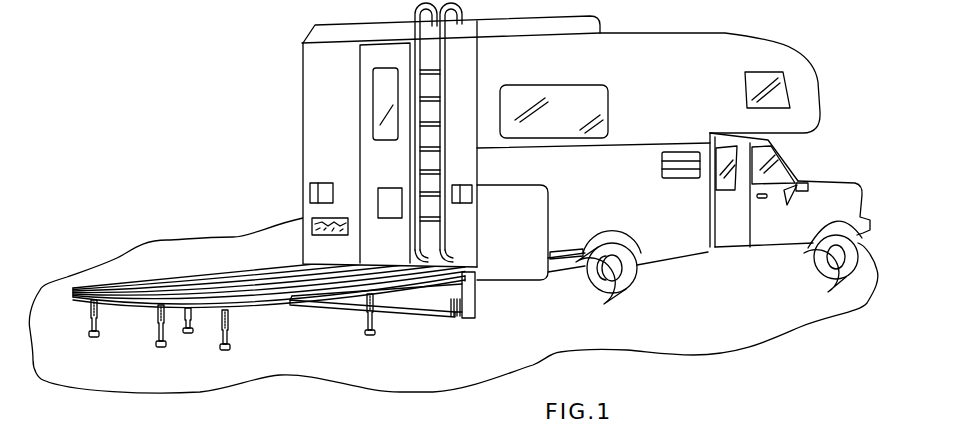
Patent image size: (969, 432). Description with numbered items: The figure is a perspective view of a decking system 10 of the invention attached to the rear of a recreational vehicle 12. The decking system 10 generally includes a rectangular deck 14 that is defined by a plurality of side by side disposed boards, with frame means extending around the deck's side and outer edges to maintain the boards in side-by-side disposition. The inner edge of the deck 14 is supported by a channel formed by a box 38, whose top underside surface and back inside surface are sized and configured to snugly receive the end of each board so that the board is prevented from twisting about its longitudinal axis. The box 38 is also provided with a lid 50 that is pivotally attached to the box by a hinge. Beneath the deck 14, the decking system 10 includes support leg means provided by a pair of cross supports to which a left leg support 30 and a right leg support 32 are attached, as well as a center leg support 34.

The decking system 10 is at (302, 291).
The recreational vehicle 12 is at (722, 30).
The deck 14 is at (266, 313).
The left leg support 30 is at (100, 318).
The right leg support 32 is at (222, 338).
The center leg support 34 is at (158, 325).
The box 38 is at (477, 293).
The lid 50 is at (458, 318).